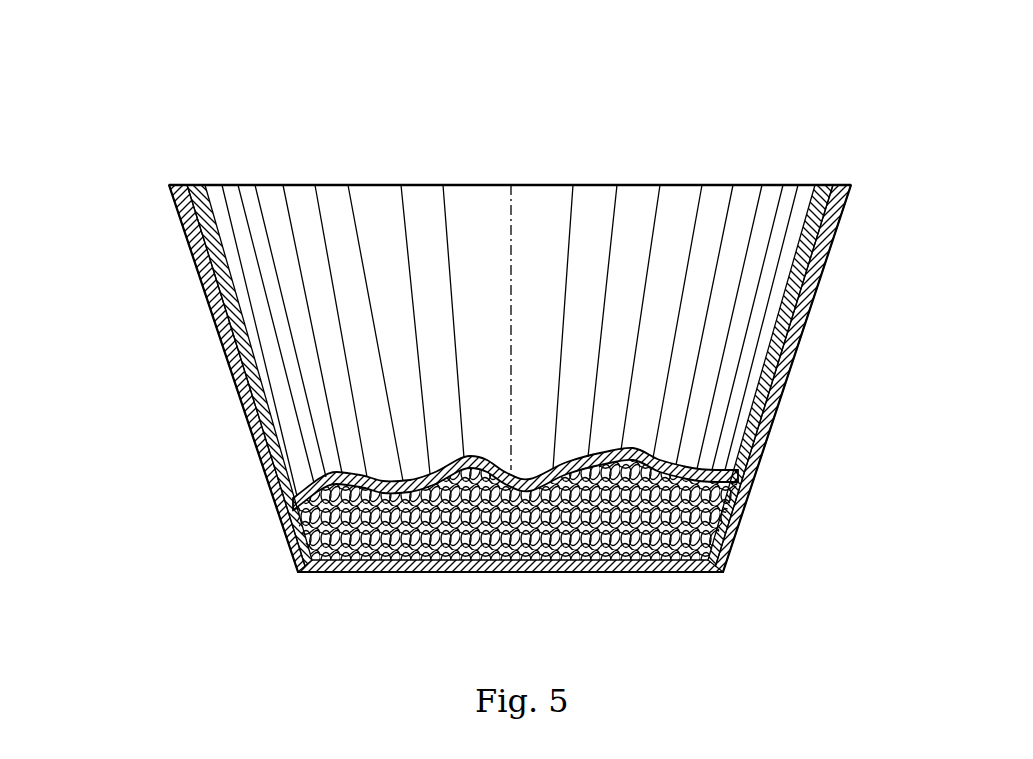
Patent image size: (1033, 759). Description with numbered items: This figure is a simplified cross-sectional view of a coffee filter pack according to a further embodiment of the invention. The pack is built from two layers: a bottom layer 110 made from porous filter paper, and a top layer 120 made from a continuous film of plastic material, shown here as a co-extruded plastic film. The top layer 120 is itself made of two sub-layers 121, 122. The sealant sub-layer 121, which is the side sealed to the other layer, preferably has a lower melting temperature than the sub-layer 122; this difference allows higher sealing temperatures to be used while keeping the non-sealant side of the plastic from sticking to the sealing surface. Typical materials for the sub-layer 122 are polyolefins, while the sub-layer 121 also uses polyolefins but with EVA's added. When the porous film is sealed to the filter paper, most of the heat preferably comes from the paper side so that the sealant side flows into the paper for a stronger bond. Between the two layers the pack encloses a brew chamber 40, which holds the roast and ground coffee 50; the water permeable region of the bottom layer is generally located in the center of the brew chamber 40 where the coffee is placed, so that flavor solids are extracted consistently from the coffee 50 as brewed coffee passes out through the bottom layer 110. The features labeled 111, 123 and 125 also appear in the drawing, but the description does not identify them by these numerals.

The bottom layer 110 is at (799, 347).
The rim 111 is at (828, 186).
The top layer 120 is at (810, 230).
The sub-layer 121 is at (184, 201).
The sub-layer 122 is at (212, 192).
The vertical ribs 123 is at (570, 440).
The interior cavity 125 is at (487, 215).
The brew chamber 40 is at (472, 482).
The roast and ground coffee 50 is at (565, 500).